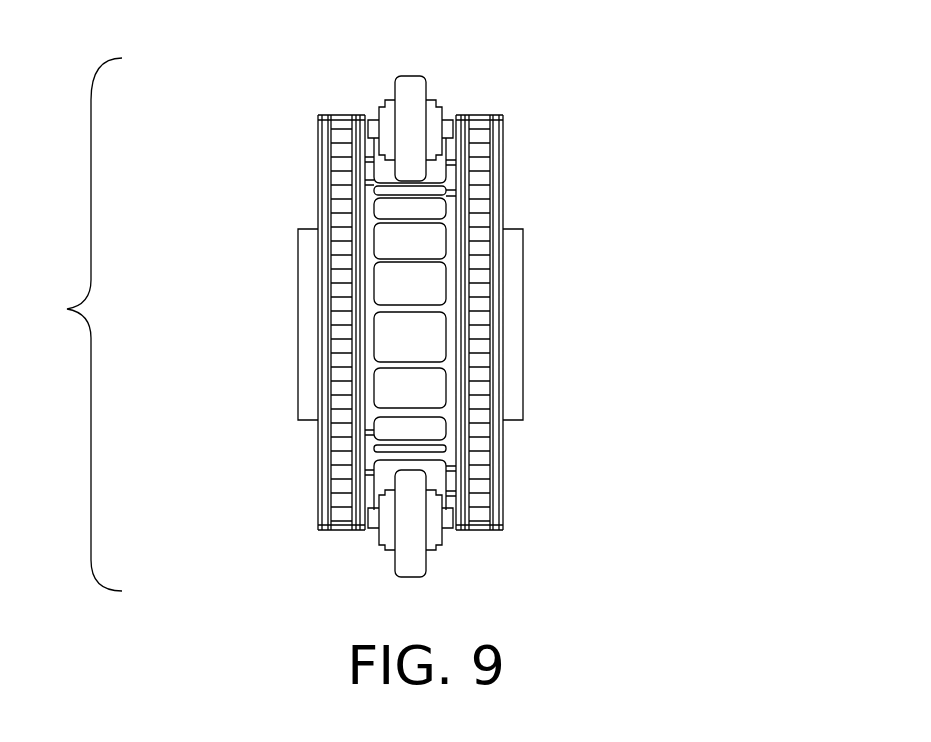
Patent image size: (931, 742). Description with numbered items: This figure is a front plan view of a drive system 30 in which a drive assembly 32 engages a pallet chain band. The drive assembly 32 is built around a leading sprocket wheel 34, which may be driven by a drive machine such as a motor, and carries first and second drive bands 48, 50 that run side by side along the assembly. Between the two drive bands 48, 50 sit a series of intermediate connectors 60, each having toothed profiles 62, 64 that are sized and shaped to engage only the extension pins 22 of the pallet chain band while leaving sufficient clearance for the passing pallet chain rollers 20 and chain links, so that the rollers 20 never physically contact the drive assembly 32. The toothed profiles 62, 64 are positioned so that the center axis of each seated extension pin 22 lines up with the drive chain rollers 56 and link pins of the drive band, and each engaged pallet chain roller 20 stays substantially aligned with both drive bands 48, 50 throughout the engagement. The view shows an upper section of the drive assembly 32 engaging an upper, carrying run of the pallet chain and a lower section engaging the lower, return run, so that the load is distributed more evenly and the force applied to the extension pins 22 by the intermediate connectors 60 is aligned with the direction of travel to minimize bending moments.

The pallet chain roller 20 is at (417, 88).
The extension pin 22 is at (377, 126).
The drive system 30 is at (75, 324).
The drive assembly 32 is at (714, 452).
The leading sprocket wheel 34 is at (532, 306).
The first drive band 48 is at (312, 151).
The second drive band 50 is at (515, 508).
The drive chain roller 56 is at (343, 393).
The intermediate connector 60 is at (428, 287).
The toothed profile 62 is at (370, 182).
The toothed profile 64 is at (453, 193).